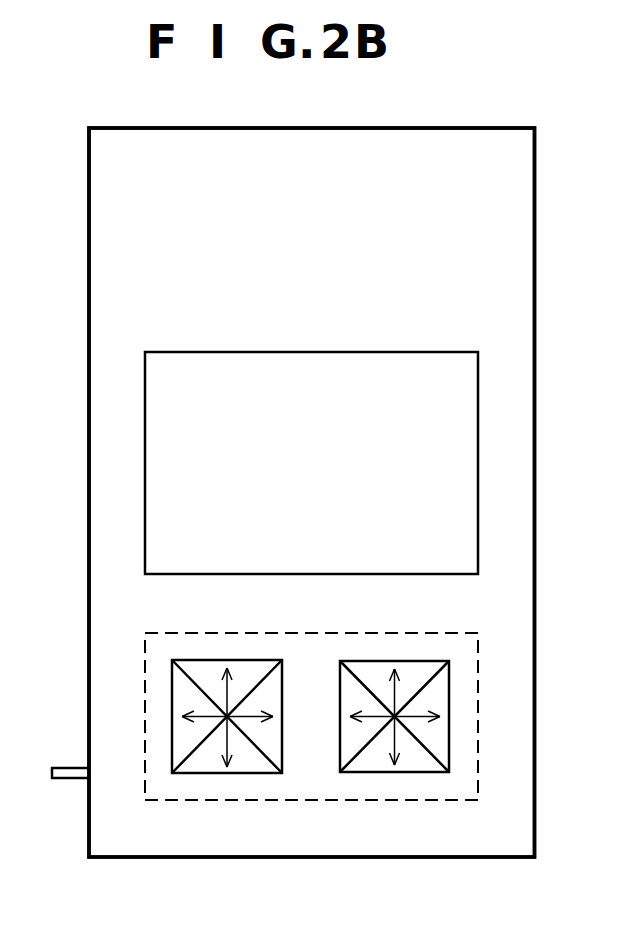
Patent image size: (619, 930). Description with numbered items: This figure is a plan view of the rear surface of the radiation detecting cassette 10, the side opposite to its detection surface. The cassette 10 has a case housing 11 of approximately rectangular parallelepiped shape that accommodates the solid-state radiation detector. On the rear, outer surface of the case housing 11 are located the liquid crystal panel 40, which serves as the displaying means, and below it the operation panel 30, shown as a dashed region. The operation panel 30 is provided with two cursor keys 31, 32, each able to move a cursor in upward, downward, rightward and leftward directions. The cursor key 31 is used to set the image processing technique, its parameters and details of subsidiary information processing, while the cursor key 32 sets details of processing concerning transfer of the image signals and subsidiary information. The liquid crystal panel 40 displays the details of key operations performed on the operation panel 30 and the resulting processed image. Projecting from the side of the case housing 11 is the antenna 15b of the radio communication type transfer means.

The radiation detecting cassette 10 is at (529, 117).
The case housing 11 is at (536, 172).
The liquid crystal panel 40 is at (452, 350).
The operation panel 30 is at (480, 643).
The cursor key 31 is at (283, 684).
The cursor key 32 is at (340, 734).
The antenna 15b is at (55, 779).